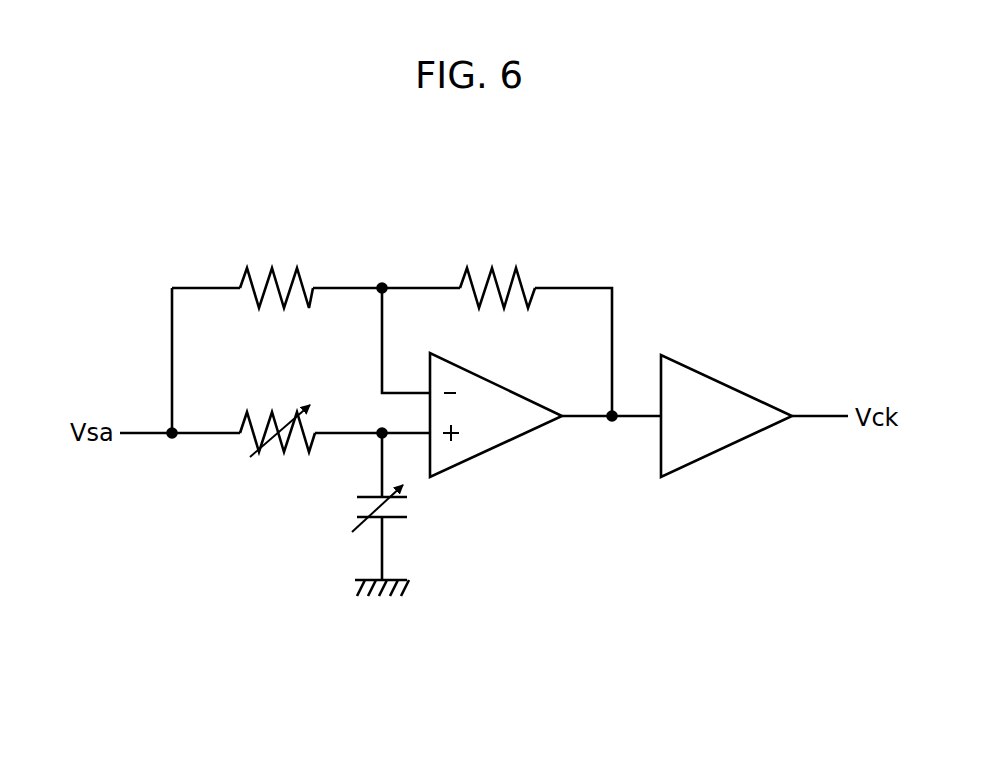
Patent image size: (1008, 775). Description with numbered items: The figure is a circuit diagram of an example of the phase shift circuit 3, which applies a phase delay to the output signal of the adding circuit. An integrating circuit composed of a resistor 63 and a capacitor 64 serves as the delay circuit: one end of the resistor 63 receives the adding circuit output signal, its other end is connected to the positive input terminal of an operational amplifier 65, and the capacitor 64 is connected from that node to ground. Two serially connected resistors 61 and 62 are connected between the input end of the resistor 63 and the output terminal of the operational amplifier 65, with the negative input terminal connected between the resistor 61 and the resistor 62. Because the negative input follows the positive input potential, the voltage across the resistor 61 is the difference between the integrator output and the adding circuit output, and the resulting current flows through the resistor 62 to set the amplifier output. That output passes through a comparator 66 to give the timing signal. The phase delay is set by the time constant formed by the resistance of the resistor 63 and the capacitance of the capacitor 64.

The phase shift circuit 3 is at (647, 189).
The resistor 61 is at (282, 270).
The resistor 62 is at (502, 270).
The resistor 63 is at (290, 437).
The capacitor 64 is at (395, 520).
The operational amplifier 65 is at (503, 425).
The comparator 66 is at (722, 397).